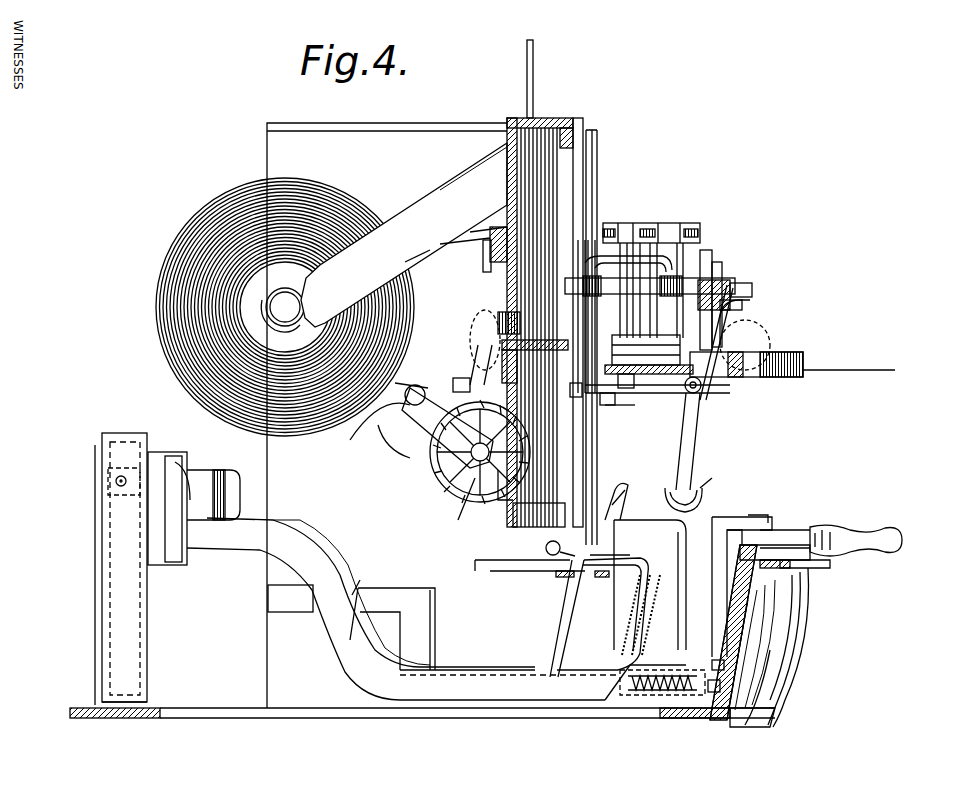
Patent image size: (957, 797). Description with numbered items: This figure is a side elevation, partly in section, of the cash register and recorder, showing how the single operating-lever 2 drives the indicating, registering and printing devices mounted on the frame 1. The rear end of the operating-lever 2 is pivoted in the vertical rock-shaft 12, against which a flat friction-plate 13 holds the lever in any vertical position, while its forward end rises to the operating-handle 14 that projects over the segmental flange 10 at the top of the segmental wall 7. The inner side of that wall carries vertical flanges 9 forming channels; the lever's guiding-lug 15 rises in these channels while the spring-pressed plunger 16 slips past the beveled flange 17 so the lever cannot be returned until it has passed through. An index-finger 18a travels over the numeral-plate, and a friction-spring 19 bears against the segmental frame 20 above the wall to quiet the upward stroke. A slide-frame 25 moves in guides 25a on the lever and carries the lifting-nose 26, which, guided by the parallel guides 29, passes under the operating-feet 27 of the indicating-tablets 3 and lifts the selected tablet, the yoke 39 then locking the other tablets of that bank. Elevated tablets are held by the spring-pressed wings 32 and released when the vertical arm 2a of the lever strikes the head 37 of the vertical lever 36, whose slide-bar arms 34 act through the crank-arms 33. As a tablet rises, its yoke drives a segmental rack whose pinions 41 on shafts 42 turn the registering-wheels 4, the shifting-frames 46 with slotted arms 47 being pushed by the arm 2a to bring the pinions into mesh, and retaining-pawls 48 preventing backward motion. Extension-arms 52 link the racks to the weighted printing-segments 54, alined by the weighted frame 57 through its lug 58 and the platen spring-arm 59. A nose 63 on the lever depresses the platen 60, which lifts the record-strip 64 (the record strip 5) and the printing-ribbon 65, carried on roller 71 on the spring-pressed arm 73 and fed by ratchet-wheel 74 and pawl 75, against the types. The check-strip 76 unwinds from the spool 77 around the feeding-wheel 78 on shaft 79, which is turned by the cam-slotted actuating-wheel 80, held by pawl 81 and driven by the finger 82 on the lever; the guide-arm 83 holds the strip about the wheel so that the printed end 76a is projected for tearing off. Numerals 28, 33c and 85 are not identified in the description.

The frame 1 is at (340, 462).
The operating-lever 2 is at (340, 570).
The vertical arm 2a is at (690, 515).
The indicating-tablets 3 is at (555, 168).
The registering-wheels 4 is at (730, 290).
The record strip 5 is at (620, 410).
The segmental wall 7 is at (740, 590).
The vertical flanges 9 is at (795, 612).
The segmental flange 10 is at (830, 564).
The rock-shaft 12 is at (128, 617).
The friction-plate 13 is at (200, 470).
The operating-handle 14 is at (885, 530).
The guiding-lug 15 is at (712, 664).
The spring-pressed plunger 16 is at (702, 720).
The beveled flange 17 is at (765, 650).
The index-finger 18a is at (775, 550).
The friction-spring 19 is at (762, 513).
The segmental frame 20 is at (803, 360).
The slide-frame 25 is at (395, 590).
The guides 25a is at (352, 590).
The lifting-nose 26 is at (546, 548).
The operating-foot 27 is at (558, 510).
The bar 28 is at (600, 555).
The guides 29 is at (560, 578).
The supporting-wings 32 is at (505, 212).
The crank-arm 33 is at (470, 232).
The link 33c is at (401, 260).
The rigid arms 34 is at (486, 258).
The vertical operating-lever 36 is at (451, 245).
The head 37 is at (505, 510).
The yoke 39 is at (498, 318).
The register-operating pinions 41 is at (565, 287).
The shafts 42 is at (722, 262).
The shifting-frames 46 is at (695, 430).
The slotted arm 47 is at (742, 304).
The retaining-pawls 48 is at (595, 245).
The extension-arm 52 is at (700, 255).
The segmental printing-frames 54 is at (660, 225).
The weighted frame 57 is at (715, 282).
The pendent lug 58 is at (600, 395).
The spring-arm 59 is at (628, 388).
The platen 60 is at (668, 372).
The nose 63 is at (722, 517).
The record-strip 64 is at (600, 398).
The printing-ribbon 65 is at (580, 388).
The roller 71 is at (453, 382).
The spring-pressed arm 73 is at (470, 350).
The ratchet-wheel 74 is at (758, 332).
The spring-pressed pawl 75 is at (715, 385).
The check-strip 76 is at (374, 425).
The printed end 76a is at (880, 370).
The spool 77 is at (285, 307).
The feeding-wheel 78 is at (438, 480).
The shaft 79 is at (462, 505).
The actuating-wheel 80 is at (440, 468).
The restraining and alining pawl 81 is at (394, 445).
The finger 82 is at (628, 500).
The guide-arm 83 is at (411, 393).
The rod 85 is at (533, 78).